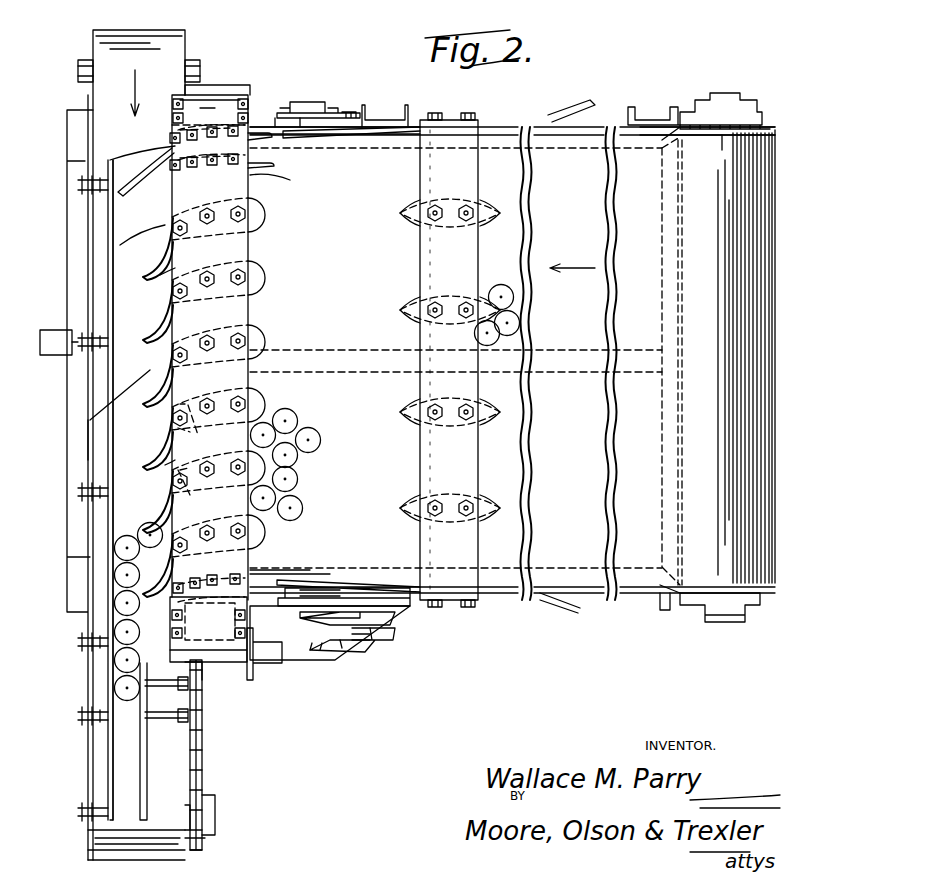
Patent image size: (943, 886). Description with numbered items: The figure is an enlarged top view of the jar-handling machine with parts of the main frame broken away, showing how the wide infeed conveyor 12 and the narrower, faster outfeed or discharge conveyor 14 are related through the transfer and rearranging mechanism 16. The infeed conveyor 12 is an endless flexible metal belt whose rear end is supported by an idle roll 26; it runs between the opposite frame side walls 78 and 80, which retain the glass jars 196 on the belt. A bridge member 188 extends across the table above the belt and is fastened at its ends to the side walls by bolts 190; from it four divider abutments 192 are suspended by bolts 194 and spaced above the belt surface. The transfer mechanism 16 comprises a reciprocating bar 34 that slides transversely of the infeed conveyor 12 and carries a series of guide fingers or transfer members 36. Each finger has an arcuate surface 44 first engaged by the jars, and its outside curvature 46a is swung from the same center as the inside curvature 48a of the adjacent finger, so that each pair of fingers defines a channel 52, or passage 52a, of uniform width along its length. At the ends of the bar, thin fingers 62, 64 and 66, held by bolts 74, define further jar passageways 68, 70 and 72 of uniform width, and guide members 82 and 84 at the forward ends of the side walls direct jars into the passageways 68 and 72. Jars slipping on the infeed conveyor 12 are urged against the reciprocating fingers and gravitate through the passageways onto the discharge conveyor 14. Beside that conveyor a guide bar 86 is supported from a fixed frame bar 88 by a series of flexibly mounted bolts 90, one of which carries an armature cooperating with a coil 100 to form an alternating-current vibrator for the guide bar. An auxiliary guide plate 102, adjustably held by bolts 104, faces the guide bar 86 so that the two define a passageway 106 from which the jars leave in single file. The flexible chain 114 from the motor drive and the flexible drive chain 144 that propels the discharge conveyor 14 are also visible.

The infeed conveyor 12 is at (568, 160).
The outfeed or discharge conveyor 14 is at (110, 84).
The transfer and rearranging mechanism 16 is at (270, 88).
The idle roll 26 is at (700, 128).
The reciprocating bar 34 is at (248, 242).
The guide fingers or transfer members 36 is at (265, 290).
The arcuate surface 44 is at (265, 402).
The outside curvature 46a is at (190, 495).
The inside curvature 48a is at (190, 432).
The channel 52 is at (160, 275).
The passage 52a is at (165, 465).
The finger 62 is at (180, 668).
The finger 64 is at (150, 215).
The finger 66 is at (150, 165).
The jar passageway 68 is at (255, 560).
The jar passageway 70 is at (262, 185).
The jar passageway 72 is at (262, 158).
The bolts 74 is at (185, 178).
The frame side wall 78 is at (538, 600).
The frame side wall 80 is at (527, 127).
The guide member 82 is at (350, 584).
The guide member 84 is at (342, 140).
The guide bar 86 is at (120, 245).
The fixed bar 88 is at (88, 432).
The bolts 90 is at (100, 190).
The coil 100 is at (45, 330).
The auxiliary guide plate 102 is at (148, 776).
The bolts 104 is at (160, 715).
The passageway 106 is at (120, 762).
The flexible chain 114 is at (395, 618).
The flexible drive chain 144 is at (200, 843).
The bridge member 188 is at (470, 468).
The bolts 190 is at (469, 113).
The divider abutments 192 is at (420, 218).
The bolts 194 is at (466, 222).
The glass jars 196 is at (508, 323).